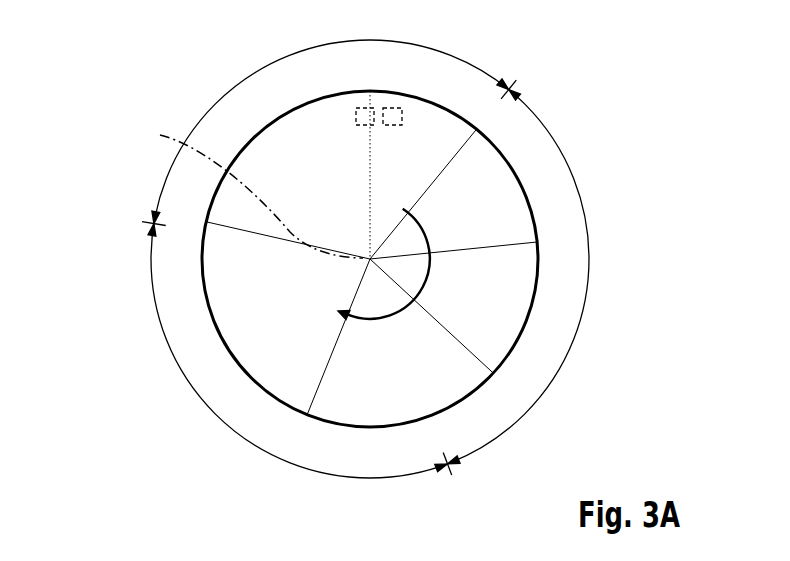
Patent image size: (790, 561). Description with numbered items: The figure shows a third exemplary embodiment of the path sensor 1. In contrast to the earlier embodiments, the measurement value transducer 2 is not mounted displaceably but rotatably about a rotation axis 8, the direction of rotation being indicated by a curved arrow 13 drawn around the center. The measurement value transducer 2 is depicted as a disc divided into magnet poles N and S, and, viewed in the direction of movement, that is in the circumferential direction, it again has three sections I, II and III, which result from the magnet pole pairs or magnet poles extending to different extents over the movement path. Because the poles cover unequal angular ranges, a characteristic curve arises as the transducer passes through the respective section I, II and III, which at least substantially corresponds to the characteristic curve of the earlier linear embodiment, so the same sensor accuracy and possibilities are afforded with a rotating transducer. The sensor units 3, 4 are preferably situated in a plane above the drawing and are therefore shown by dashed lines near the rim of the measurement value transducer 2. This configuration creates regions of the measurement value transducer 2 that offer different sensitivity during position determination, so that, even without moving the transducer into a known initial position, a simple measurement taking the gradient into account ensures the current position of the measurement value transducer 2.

The path sensor 1 is at (349, 254).
The measurement value transducer 2 is at (462, 370).
The sensor unit 3 is at (364, 106).
The sensor unit 4 is at (391, 106).
The rotation axis 8 is at (252, 192).
The rotation direction arrow 13 is at (420, 292).
The section I is at (252, 446).
The section II is at (275, 63).
The section III is at (590, 288).